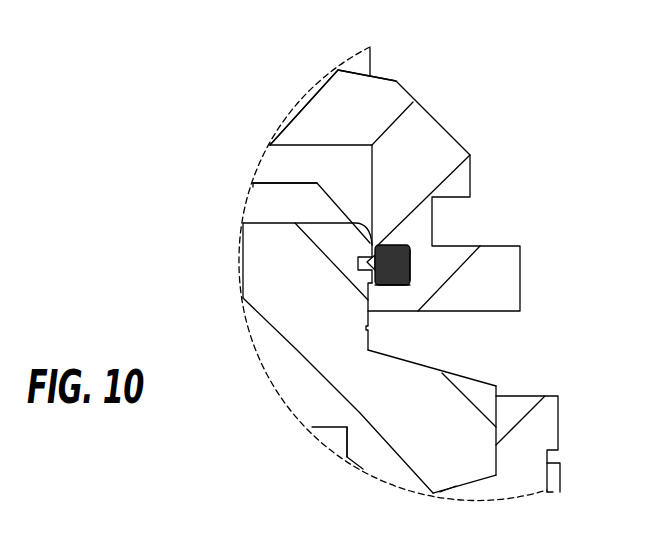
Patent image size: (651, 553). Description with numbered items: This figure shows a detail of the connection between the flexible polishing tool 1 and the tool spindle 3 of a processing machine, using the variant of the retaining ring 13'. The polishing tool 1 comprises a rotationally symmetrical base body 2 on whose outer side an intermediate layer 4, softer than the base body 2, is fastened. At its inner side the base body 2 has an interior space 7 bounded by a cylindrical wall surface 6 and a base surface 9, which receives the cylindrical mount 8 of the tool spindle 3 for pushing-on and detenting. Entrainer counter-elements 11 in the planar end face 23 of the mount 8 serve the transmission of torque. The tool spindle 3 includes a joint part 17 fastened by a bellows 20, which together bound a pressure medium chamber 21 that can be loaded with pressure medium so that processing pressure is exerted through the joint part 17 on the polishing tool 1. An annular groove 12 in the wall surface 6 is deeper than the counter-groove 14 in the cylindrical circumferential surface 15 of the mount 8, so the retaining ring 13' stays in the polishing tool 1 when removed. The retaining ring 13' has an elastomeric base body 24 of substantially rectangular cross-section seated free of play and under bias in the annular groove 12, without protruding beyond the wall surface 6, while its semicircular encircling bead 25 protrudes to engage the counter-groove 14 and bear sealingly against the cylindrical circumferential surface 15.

The polishing tool 1 is at (409, 70).
The base body 2 is at (418, 127).
The tool spindle 3 is at (528, 383).
The intermediate layer 4 is at (368, 63).
The cylindrical wall surface 6 is at (372, 167).
The interior space 7 is at (279, 157).
The cylindrical mount 8 is at (292, 295).
The base surface 9 is at (290, 149).
The entrainer counter-elements 11 is at (262, 212).
The annular groove 12 is at (400, 245).
The retaining ring 13' is at (401, 323).
The counter-groove 14 is at (358, 270).
The cylindrical circumferential surface 15 is at (372, 327).
The joint part 17 is at (330, 439).
The bellows 20 is at (482, 490).
The pressure medium chamber 21 is at (343, 439).
The planar end face 23 is at (266, 175).
The elastomeric base body 24 is at (410, 275).
The encircling bead 25 is at (360, 258).